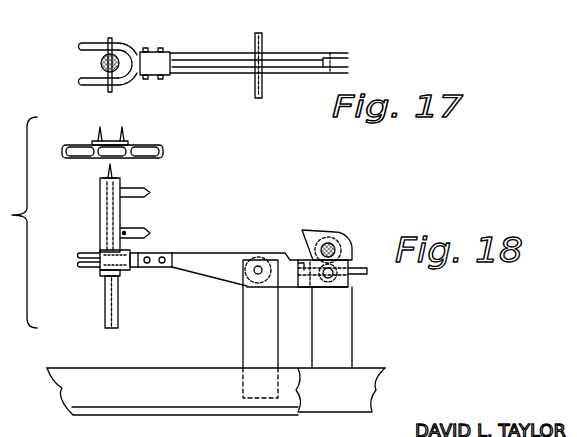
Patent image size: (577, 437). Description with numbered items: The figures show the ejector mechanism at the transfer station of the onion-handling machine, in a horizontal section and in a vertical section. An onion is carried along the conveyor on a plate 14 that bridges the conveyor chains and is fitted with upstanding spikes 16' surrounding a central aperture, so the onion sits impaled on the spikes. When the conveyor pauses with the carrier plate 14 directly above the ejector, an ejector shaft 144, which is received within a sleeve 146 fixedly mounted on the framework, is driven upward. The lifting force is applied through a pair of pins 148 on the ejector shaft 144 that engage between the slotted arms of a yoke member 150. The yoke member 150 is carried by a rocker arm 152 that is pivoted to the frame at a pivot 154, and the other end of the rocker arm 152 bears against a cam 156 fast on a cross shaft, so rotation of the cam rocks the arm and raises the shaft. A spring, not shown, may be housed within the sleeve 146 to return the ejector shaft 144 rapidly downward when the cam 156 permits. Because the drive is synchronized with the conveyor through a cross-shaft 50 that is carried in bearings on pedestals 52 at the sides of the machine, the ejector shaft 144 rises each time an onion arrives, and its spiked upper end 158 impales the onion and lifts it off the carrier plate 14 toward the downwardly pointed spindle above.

In FIG. 18, the plate 14 is at (130, 143).
In FIG. 18, the upstanding spikes 16' is at (93, 130).
In FIG. 18, the cross-shaft 50 is at (333, 245).
In FIG. 18, the pedestals 52 is at (350, 331).
In FIG. 18, the ejector shaft 144 is at (108, 300).
In FIG. 18, the sleeve 146 is at (100, 221).
In FIG. 17, the pins 148 is at (113, 41).
In FIG. 17, the yoke member 150 is at (80, 52).
In FIG. 18, the yoke member 150 is at (80, 266).
In FIG. 17, the rocker arm 152 is at (224, 38).
In FIG. 18, the rocker arm 152 is at (219, 260).
In FIG. 17, the pivot 154 is at (263, 50).
In FIG. 18, the pivot 154 is at (257, 274).
In FIG. 18, the cam 156 is at (305, 228).
In FIG. 18, the spiked upper end 158 is at (115, 170).